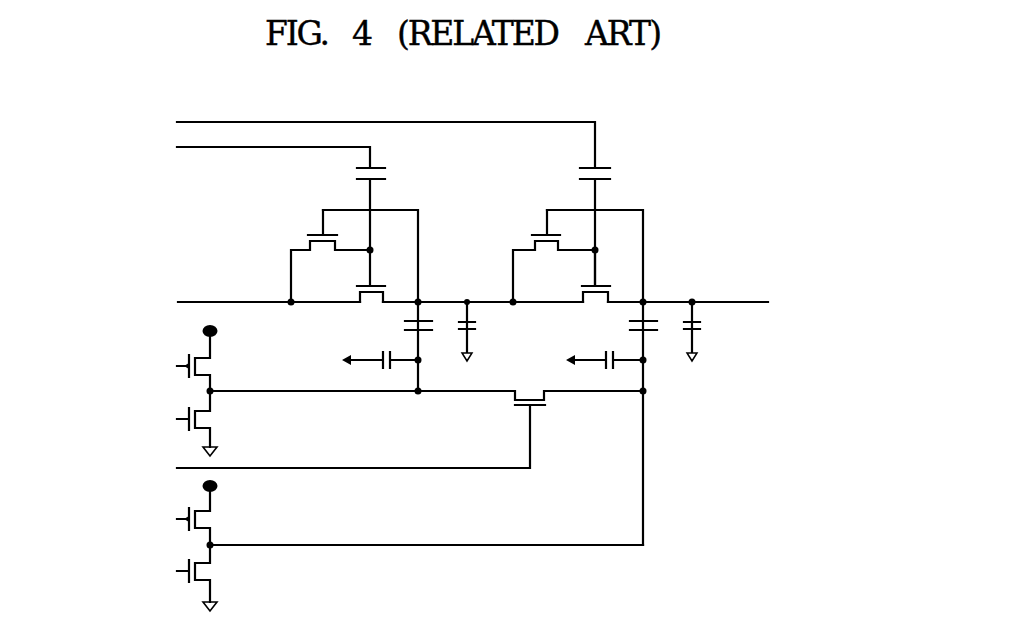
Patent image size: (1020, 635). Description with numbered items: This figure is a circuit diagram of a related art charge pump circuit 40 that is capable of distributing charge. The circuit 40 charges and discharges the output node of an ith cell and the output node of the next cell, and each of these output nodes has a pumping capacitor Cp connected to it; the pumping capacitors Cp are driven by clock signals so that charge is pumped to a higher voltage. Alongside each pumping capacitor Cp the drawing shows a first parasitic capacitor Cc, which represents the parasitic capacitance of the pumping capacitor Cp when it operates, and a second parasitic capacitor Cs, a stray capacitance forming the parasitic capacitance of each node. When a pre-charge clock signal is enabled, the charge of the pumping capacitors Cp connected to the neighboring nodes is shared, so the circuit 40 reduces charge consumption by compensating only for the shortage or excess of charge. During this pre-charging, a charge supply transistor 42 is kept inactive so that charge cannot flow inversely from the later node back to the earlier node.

The charge pump circuit 40 is at (722, 151).
The charge supply transistor 42 is at (592, 305).
The pumping capacitor Cp is at (513, 326).
The second parasitic capacitor Cs is at (594, 331).
The first parasitic capacitor Cc is at (492, 369).